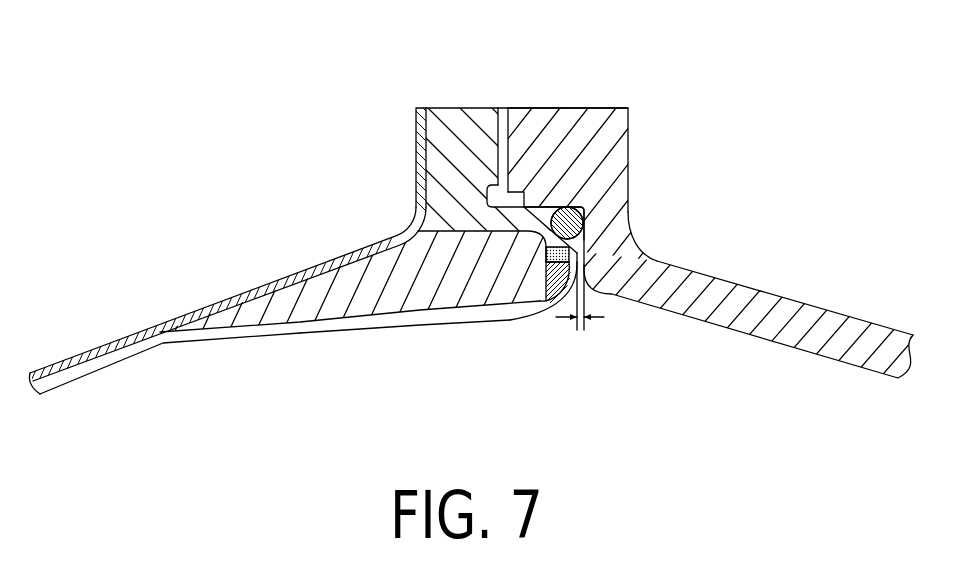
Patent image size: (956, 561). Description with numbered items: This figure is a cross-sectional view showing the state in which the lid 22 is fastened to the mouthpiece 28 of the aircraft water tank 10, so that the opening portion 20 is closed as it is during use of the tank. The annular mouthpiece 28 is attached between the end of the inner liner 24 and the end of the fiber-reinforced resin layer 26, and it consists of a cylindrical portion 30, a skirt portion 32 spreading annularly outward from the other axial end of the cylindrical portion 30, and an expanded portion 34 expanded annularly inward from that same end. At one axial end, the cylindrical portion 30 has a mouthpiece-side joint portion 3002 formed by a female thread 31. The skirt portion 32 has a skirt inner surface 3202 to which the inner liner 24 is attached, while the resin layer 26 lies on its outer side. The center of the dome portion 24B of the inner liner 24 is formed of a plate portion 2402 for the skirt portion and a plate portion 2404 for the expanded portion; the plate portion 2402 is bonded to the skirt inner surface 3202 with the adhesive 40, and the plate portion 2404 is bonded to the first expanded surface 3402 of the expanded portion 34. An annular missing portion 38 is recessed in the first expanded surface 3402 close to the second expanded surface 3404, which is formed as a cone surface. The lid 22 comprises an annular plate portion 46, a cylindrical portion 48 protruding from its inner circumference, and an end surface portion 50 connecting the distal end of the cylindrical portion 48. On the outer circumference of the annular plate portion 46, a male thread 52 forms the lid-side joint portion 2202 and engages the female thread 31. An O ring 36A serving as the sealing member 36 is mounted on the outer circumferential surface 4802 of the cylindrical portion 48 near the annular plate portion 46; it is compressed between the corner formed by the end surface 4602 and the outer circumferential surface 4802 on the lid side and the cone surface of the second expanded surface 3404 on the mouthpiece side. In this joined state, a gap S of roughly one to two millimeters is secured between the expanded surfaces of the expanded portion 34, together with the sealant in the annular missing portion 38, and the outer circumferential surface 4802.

The aircraft water tank 10 is at (166, 178).
The opening portion 20 is at (760, 409).
The lid 22 is at (813, 303).
The lid-side joint portion 2202 is at (516, 199).
The inner liner 24 is at (123, 360).
The dome portion 24B is at (170, 363).
The plate portion for skirt portion 2402 is at (387, 330).
The plate portion for expanded portion 2404 is at (587, 286).
The fiber-reinforced resin layer 26 is at (112, 340).
The mouthpiece 28 is at (443, 108).
The cylindrical portion 30 is at (456, 150).
The female thread 31 is at (510, 150).
The mouthpiece-side joint portion 3002 is at (505, 196).
The skirt portion 32 is at (300, 273).
The skirt inner surface 3202 is at (312, 327).
The expanded portion 34 is at (513, 263).
The first expanded surface 3402 is at (546, 262).
The second expanded surface 3404 is at (548, 212).
The sealing member 36 is at (567, 223).
The O ring 36A is at (583, 222).
The annular missing portion 38 is at (556, 303).
The adhesive 40 is at (418, 231).
The annular plate portion 46 is at (548, 108).
The end surface 4602 is at (585, 210).
The cylindrical portion 48 is at (630, 234).
The outer circumferential surface 4802 is at (652, 260).
The end surface portion 50 is at (850, 317).
The male thread 52 is at (474, 110).
The gap S is at (580, 307).